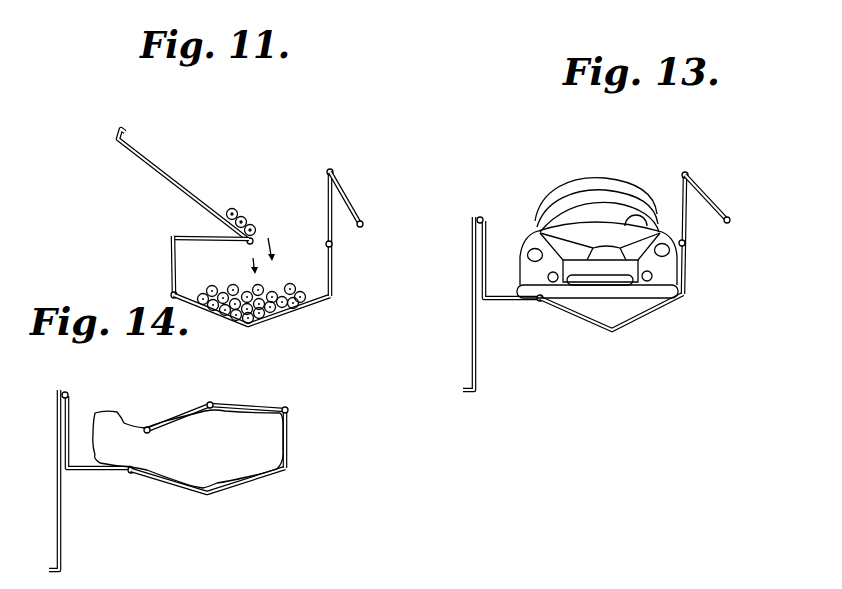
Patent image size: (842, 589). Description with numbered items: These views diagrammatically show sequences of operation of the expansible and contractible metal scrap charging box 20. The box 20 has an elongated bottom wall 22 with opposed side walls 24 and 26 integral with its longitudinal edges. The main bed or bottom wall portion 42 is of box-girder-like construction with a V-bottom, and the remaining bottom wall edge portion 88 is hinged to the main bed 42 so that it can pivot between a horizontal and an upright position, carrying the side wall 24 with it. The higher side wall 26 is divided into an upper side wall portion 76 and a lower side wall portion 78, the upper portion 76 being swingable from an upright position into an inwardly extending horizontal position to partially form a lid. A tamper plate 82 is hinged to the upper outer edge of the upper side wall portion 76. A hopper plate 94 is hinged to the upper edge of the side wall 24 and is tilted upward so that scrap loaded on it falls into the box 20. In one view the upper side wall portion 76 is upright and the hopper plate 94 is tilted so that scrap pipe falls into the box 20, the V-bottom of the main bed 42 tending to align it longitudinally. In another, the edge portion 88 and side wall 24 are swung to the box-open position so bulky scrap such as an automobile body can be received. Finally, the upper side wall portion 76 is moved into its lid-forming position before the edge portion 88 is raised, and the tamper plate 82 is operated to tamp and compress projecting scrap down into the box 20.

In FIG. 11, the charging box 20 is at (252, 255).
In FIG. 13, the charging box 20 is at (627, 253).
In FIG. 14, the charging box 20 is at (205, 440).
In FIG. 11, the bottom wall 22 is at (272, 329).
In FIG. 13, the bottom wall 22 is at (527, 303).
In FIG. 14, the bottom wall 22 is at (116, 483).
In FIG. 11, the side wall 24 is at (204, 250).
In FIG. 13, the side wall 24 is at (508, 254).
In FIG. 14, the side wall 24 is at (96, 442).
In FIG. 11, the side wall 26 is at (332, 232).
In FIG. 13, the side wall 26 is at (687, 236).
In FIG. 14, the side wall 26 is at (307, 439).
In FIG. 11, the main bed or bottom wall portion 42 is at (223, 313).
In FIG. 13, the main bed or bottom wall portion 42 is at (653, 315).
In FIG. 14, the main bed or bottom wall portion 42 is at (247, 480).
In FIG. 11, the upper side wall portion 76 is at (328, 216).
In FIG. 13, the upper side wall portion 76 is at (678, 195).
In FIG. 14, the upper side wall portion 76 is at (257, 407).
In FIG. 11, the lower side wall portion 78 is at (333, 293).
In FIG. 13, the lower side wall portion 78 is at (687, 290).
In FIG. 14, the lower side wall portion 78 is at (287, 463).
In FIG. 11, the tamper plate 82 is at (353, 203).
In FIG. 13, the tamper plate 82 is at (717, 205).
In FIG. 14, the tamper plate 82 is at (203, 400).
In FIG. 11, the bottom wall edge portion 88 is at (176, 277).
In FIG. 13, the bottom wall edge portion 88 is at (497, 295).
In FIG. 14, the bottom wall edge portion 88 is at (90, 470).
In FIG. 11, the hopper plate 94 is at (173, 179).
In FIG. 13, the hopper plate 94 is at (470, 362).
In FIG. 14, the hopper plate 94 is at (57, 523).